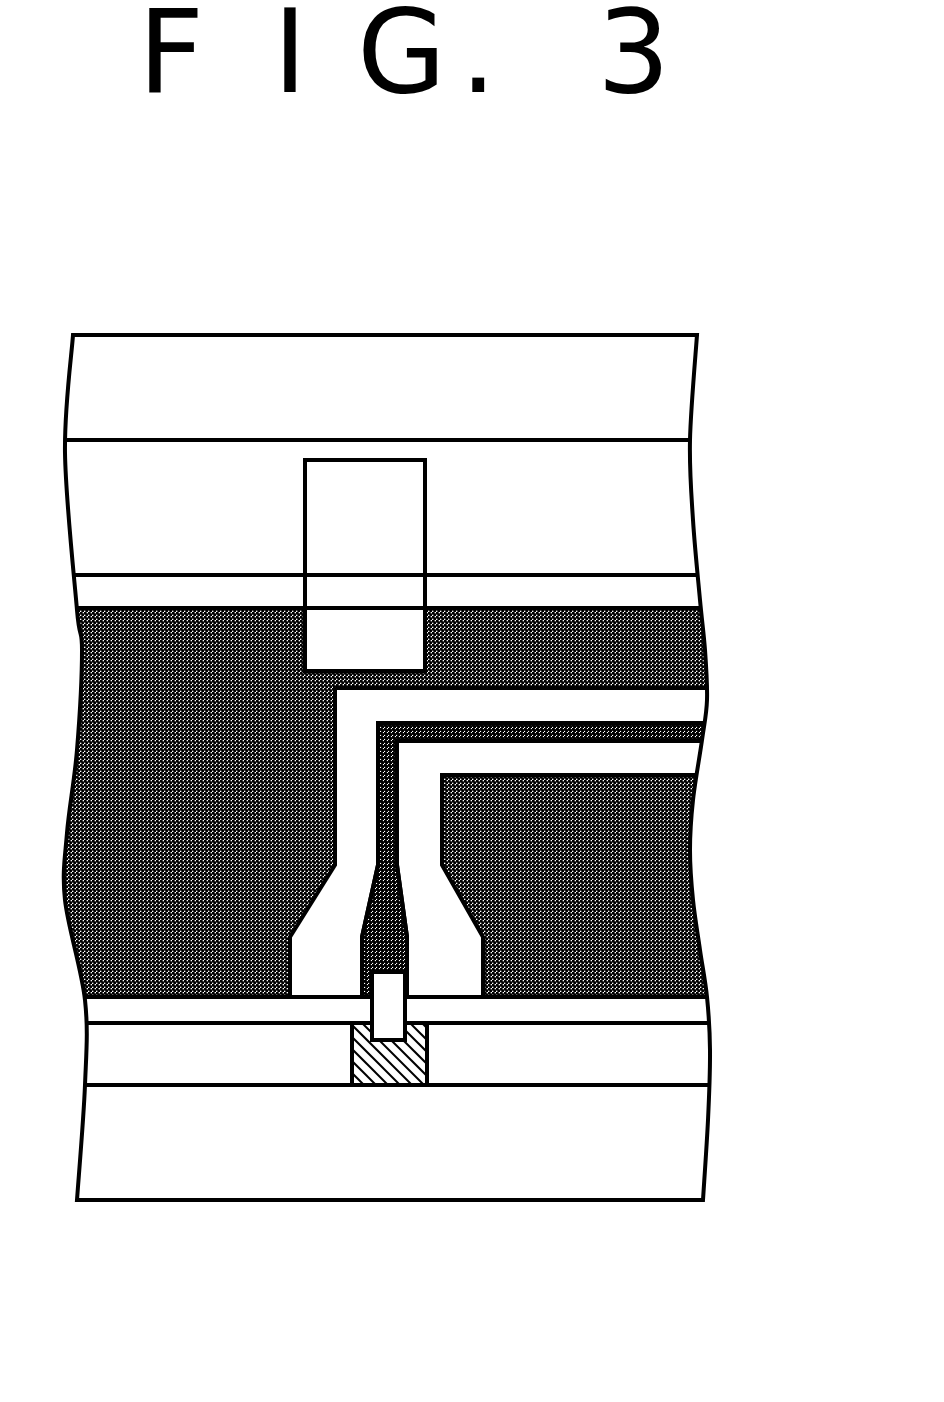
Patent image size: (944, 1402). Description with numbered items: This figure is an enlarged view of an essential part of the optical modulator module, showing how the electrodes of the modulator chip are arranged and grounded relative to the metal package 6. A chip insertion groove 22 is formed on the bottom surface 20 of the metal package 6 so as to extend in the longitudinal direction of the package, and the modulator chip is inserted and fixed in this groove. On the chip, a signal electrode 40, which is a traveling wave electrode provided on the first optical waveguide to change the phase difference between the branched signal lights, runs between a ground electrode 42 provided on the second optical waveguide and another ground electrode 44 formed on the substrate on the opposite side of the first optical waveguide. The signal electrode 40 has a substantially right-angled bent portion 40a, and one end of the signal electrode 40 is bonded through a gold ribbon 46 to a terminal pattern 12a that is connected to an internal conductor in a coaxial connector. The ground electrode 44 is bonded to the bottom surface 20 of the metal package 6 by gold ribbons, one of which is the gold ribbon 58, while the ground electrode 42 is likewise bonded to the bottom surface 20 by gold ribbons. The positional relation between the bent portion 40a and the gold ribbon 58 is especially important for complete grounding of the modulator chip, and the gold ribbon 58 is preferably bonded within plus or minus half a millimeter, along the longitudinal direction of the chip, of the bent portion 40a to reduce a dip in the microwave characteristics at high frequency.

The metal package 6 is at (513, 328).
The bottom surface 20 is at (212, 455).
The gold ribbon 58 is at (343, 470).
The chip insertion groove 22 is at (642, 577).
The ground electrode 44 is at (692, 660).
The signal electrode 40 is at (687, 733).
The bent portion 40a is at (377, 723).
The ground electrode 42 is at (675, 882).
The gold ribbon 46 is at (375, 1045).
The terminal pattern 12a is at (398, 1050).